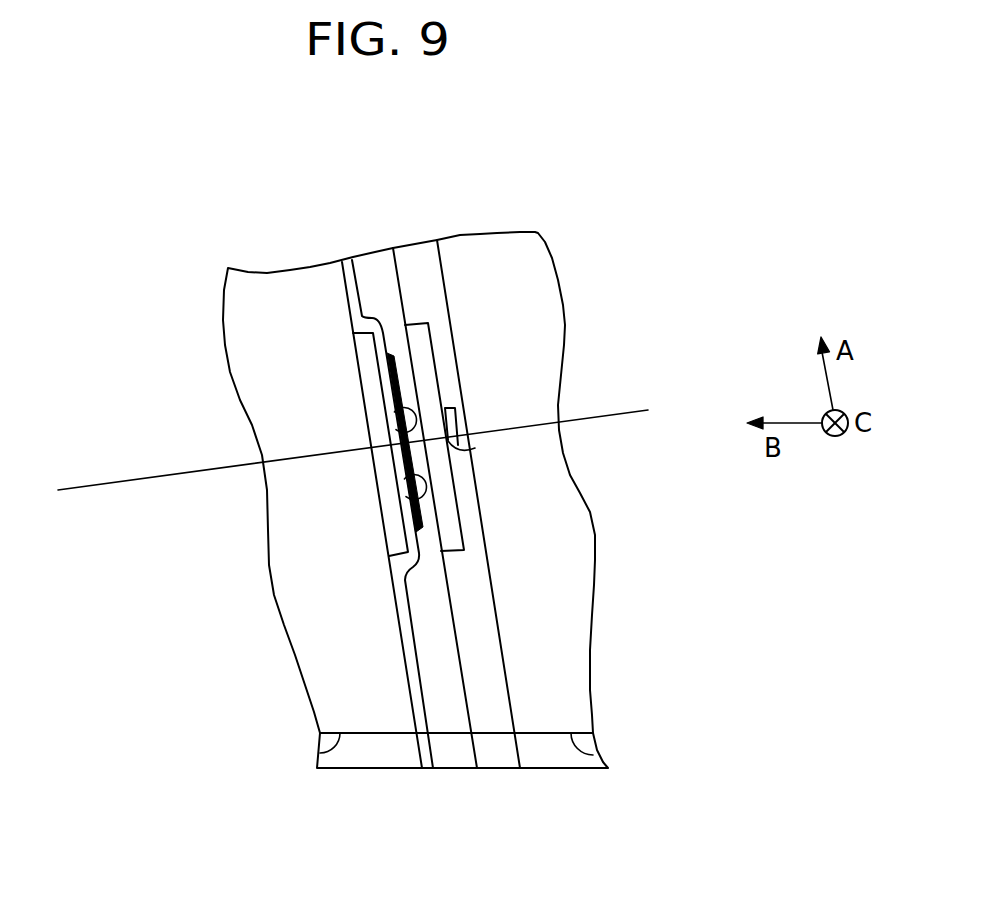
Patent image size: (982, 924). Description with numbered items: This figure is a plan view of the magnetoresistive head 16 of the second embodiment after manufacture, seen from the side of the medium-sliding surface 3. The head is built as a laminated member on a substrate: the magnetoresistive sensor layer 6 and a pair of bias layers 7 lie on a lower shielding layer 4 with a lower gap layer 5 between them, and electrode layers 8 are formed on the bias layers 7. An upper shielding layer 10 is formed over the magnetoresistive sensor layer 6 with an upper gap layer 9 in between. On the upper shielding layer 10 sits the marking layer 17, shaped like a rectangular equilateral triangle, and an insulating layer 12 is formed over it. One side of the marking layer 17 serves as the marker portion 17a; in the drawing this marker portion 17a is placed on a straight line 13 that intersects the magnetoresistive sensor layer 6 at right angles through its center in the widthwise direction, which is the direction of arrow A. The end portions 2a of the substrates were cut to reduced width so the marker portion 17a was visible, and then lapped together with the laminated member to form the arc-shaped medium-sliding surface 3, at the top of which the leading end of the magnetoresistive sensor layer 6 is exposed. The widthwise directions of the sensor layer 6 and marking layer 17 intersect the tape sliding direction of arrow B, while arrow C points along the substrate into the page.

The end portion 2a is at (318, 749).
The medium-sliding surface 3 is at (328, 675).
The lower shielding layer 4 is at (363, 374).
The lower gap layer 5 is at (350, 262).
The magnetoresistive sensor layer 6 is at (400, 416).
The bias layer 7 is at (390, 355).
The electrode layer 8 is at (393, 363).
The upper gap layer 9 is at (373, 263).
The upper shielding layer 10 is at (452, 512).
The insulating layer 12 is at (437, 302).
The straight line 13 is at (60, 487).
The magnetoresistive head 16 is at (186, 243).
The marking layer 17 is at (463, 417).
The marker portion 17a is at (475, 448).